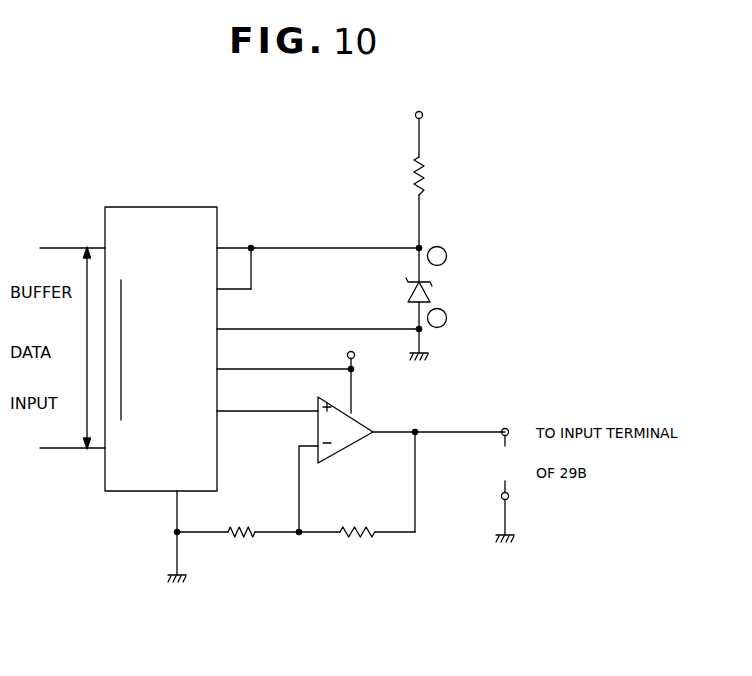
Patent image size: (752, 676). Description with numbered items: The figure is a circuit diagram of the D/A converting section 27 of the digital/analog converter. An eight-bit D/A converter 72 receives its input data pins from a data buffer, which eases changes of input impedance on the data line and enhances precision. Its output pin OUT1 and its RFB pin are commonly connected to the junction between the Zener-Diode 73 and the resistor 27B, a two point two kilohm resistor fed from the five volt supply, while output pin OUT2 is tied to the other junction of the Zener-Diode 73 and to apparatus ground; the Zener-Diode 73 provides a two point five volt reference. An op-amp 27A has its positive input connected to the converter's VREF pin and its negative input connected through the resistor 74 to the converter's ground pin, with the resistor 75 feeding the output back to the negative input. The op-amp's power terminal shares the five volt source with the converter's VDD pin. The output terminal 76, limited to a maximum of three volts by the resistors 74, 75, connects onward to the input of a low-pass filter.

The D/A converter 72 is at (180, 207).
The D/A converting section 27 is at (492, 146).
The op-amp 27A is at (357, 424).
The resistor 27B is at (432, 188).
The Zener-Diode 73 is at (431, 293).
The resistor 74 is at (246, 541).
The resistor 75 is at (367, 541).
The output terminal 76 is at (502, 486).